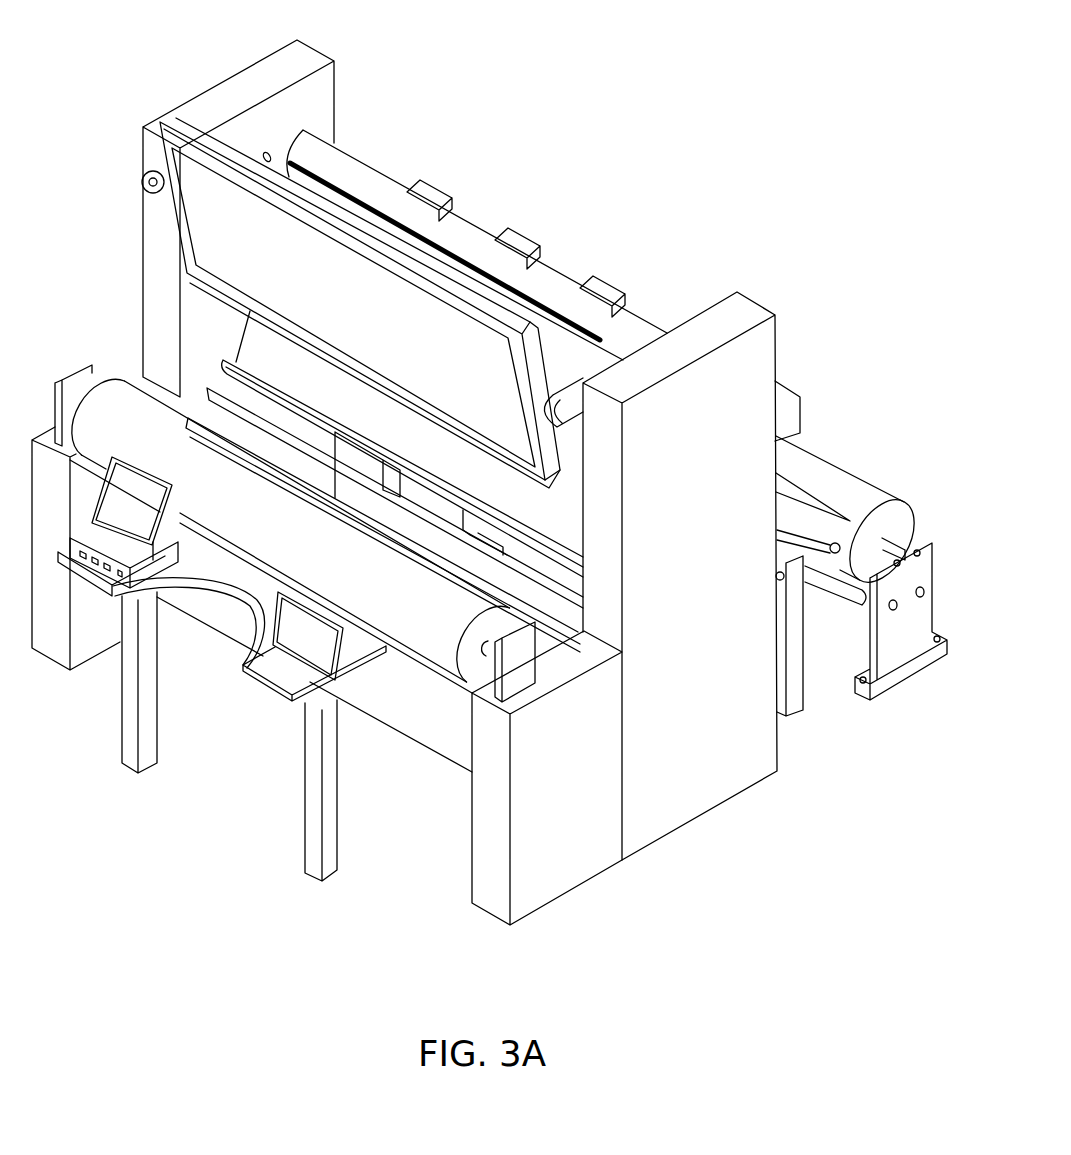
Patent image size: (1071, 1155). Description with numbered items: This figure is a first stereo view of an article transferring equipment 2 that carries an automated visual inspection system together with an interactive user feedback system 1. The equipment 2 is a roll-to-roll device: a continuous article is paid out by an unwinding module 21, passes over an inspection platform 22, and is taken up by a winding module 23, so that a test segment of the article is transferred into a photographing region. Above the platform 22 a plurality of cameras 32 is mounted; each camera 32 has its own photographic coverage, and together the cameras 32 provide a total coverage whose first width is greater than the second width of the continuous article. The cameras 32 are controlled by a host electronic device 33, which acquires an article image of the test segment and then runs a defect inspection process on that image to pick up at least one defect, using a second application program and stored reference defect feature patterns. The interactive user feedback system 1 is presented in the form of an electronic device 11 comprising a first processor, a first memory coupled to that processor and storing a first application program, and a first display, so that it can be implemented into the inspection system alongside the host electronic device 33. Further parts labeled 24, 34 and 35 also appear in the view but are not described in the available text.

The interactive user feedback system 1 is at (343, 647).
The article transferring equipment 2 is at (822, 216).
The connection cable 11 is at (283, 627).
The unwinding module 21 is at (837, 597).
The inspection platform 22 is at (254, 342).
The winding module 23 is at (543, 668).
The terminal tray 24 is at (268, 688).
The cameras 32 is at (496, 238).
The host electronic device 33 is at (173, 487).
The inspection panel 34 is at (181, 123).
The guide roller 35 is at (821, 514).